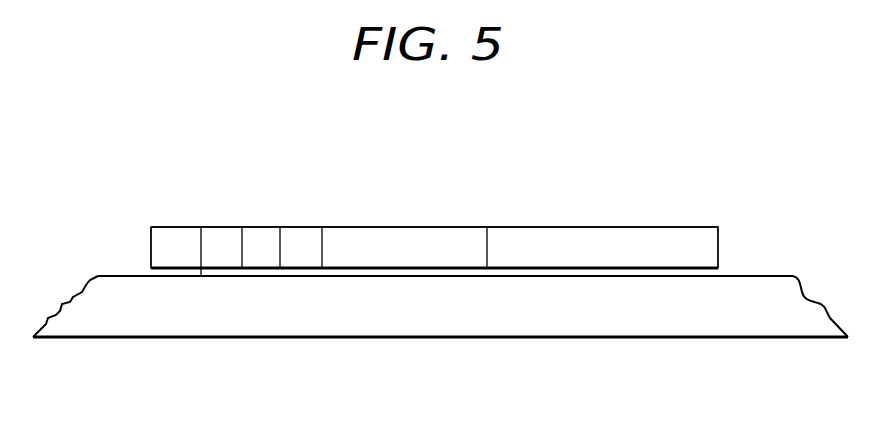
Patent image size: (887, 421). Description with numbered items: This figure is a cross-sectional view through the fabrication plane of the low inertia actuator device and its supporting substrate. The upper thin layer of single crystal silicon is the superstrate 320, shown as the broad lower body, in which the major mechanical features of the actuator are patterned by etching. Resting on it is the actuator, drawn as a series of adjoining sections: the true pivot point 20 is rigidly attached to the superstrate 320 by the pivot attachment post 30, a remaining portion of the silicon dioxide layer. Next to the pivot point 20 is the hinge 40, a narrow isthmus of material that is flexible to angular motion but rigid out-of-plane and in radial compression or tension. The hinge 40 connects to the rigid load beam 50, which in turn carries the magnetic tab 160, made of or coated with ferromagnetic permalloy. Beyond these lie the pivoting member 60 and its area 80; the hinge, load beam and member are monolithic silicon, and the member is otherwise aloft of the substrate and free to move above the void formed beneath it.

The true pivot point 20 is at (182, 235).
The pivot attachment post 30 is at (153, 272).
The hinge 40 is at (222, 234).
The rigid load beam 50 is at (266, 235).
The magnetic tab 160 is at (307, 235).
The pivoting member 60 is at (414, 235).
The pivoting member area 80 is at (607, 235).
The superstrate 320 is at (413, 313).